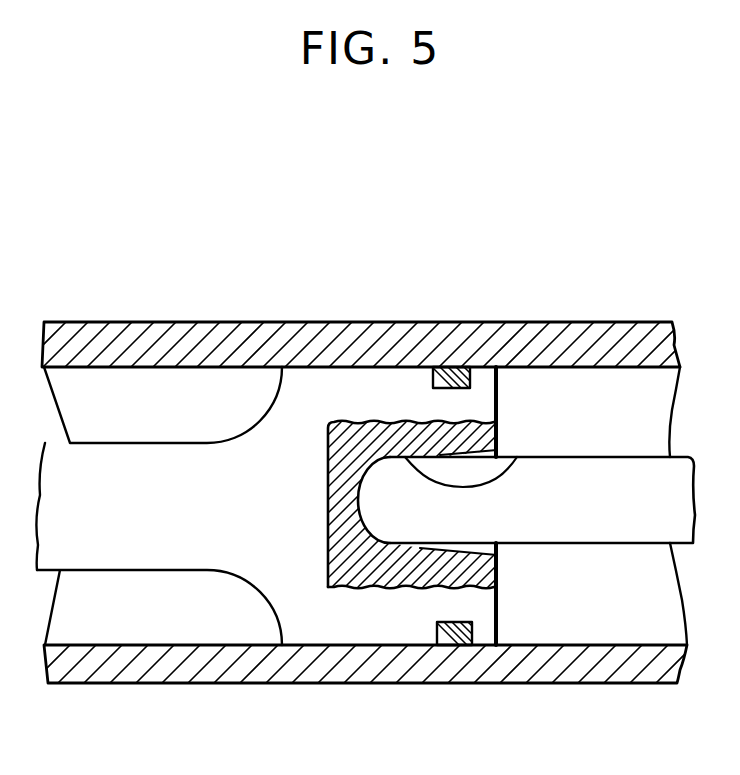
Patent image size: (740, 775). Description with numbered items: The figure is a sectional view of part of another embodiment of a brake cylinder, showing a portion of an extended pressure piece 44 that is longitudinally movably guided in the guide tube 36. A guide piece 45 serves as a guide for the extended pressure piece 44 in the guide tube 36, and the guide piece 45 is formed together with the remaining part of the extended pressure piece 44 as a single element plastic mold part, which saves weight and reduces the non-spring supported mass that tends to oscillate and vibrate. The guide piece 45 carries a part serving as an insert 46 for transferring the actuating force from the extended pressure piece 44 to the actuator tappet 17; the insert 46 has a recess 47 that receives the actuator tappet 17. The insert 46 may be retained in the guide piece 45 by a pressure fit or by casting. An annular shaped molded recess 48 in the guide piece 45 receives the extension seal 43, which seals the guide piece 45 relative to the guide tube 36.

The actuator tappet 17 is at (558, 527).
The guide tube 36 is at (172, 348).
The extension seal 43 is at (453, 632).
The extended pressure piece 44 is at (92, 543).
The guide piece 45 is at (312, 630).
The insert 46 is at (377, 440).
The recess 47 is at (517, 457).
The annular shaped molded recess 48 is at (447, 620).